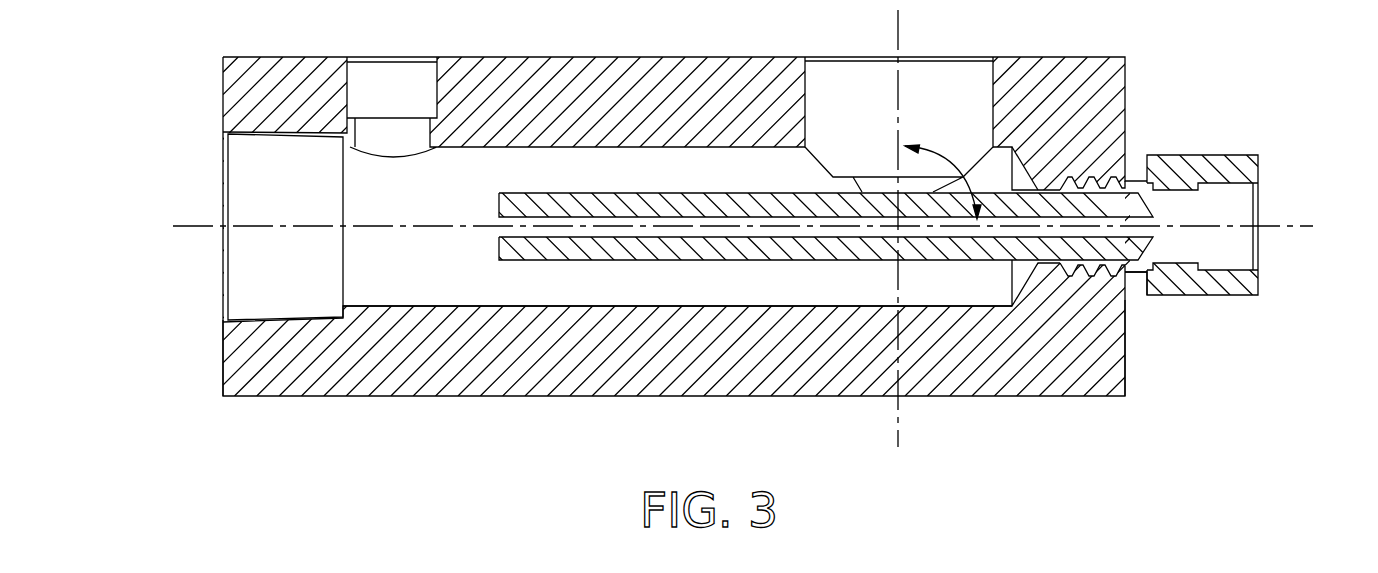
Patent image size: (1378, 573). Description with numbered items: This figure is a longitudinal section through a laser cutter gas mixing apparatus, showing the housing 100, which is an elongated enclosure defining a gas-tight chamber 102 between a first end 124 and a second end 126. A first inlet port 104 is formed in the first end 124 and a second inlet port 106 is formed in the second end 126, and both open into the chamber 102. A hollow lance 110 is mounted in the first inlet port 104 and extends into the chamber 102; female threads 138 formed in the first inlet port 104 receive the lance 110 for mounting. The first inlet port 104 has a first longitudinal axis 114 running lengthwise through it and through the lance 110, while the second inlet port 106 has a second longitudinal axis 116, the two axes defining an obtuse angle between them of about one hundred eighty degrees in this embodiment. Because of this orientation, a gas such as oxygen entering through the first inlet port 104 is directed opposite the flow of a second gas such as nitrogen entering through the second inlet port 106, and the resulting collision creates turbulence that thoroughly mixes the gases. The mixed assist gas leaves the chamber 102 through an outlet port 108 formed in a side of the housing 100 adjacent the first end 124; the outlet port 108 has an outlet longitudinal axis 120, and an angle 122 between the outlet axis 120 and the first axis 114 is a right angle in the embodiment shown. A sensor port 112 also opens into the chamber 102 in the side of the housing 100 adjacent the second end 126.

The housing 100 is at (583, 57).
The gas-tight chamber 102 is at (437, 294).
The first inlet port 104 is at (1145, 308).
The second inlet port 106 is at (222, 154).
The outlet port 108 is at (837, 57).
The hollow lance 110 is at (532, 262).
The sensor port 112 is at (401, 57).
The first longitudinal axis 114 is at (1275, 227).
The second longitudinal axis 116 is at (203, 226).
The outlet longitudinal axis 120 is at (900, 420).
The angle 122 is at (950, 160).
The first end 124 is at (1127, 360).
The second end 126 is at (223, 352).
The female threads 138 is at (1128, 176).